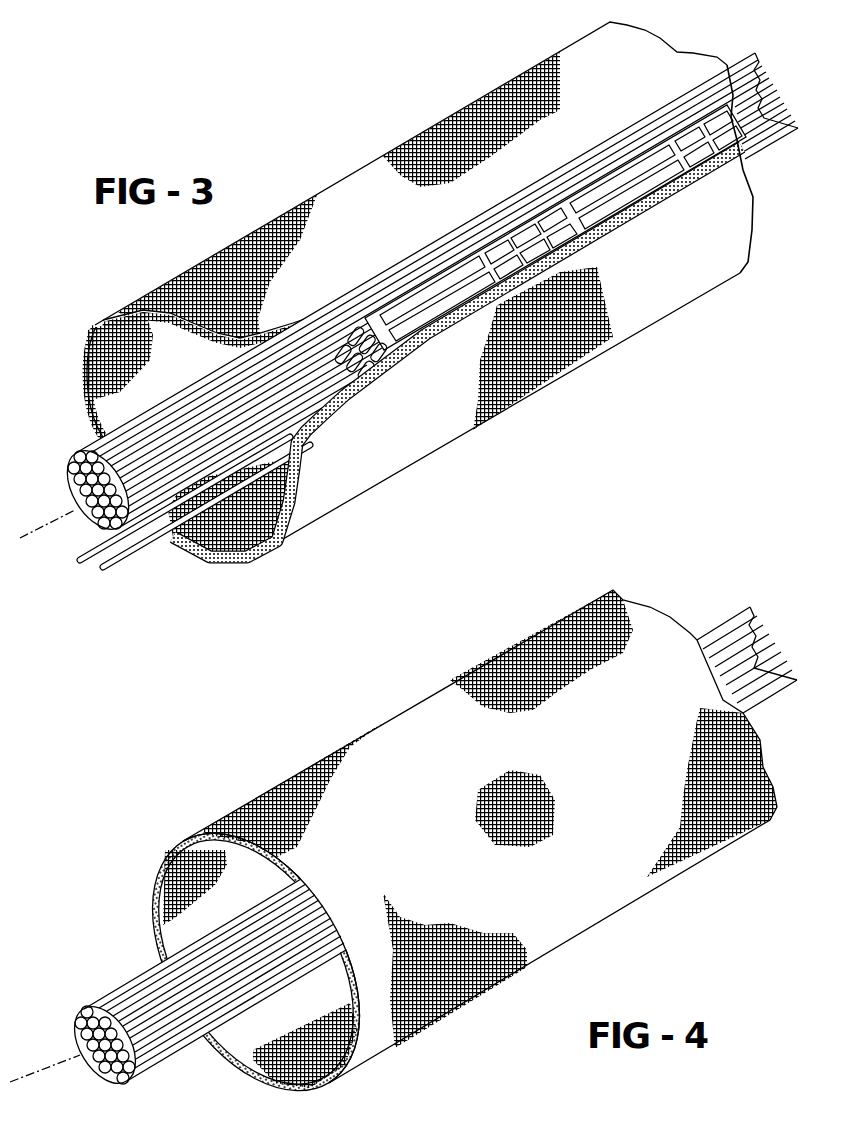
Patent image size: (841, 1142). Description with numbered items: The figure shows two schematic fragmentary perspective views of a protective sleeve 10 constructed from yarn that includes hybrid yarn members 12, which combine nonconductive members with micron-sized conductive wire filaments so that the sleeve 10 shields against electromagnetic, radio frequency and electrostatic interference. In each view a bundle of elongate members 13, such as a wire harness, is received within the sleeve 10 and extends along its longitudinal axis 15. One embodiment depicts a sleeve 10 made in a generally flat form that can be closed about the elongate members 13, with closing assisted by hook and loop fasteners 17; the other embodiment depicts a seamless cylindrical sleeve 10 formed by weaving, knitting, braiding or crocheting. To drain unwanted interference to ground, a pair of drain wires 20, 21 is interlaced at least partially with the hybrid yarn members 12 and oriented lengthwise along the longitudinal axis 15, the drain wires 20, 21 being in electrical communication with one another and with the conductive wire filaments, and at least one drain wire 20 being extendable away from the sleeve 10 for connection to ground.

In FIG. 3, the sleeve 10 is at (407, 327).
In FIG. 4, the sleeve 10 is at (403, 858).
In FIG. 3, the hybrid yarn members 12 is at (377, 184).
In FIG. 4, the hybrid yarn members 12 is at (441, 720).
In FIG. 3, the elongate members 13 is at (92, 458).
In FIG. 4, the elongate members 13 is at (137, 983).
In FIG. 3, the longitudinal axis 15 is at (27, 523).
In FIG. 4, the longitudinal axis 15 is at (55, 1063).
In FIG. 3, the hook and loop fasteners 17 is at (735, 76).
In FIG. 3, the drain wire 20 is at (147, 553).
In FIG. 3, the drain wire 21 is at (82, 566).